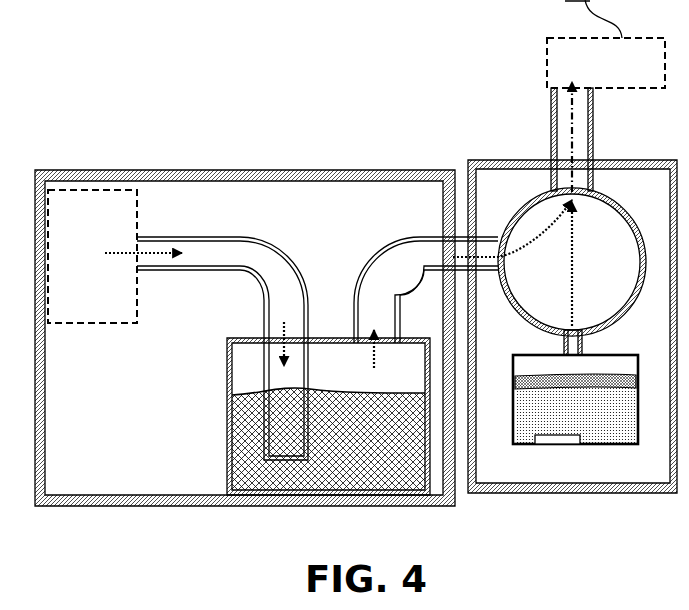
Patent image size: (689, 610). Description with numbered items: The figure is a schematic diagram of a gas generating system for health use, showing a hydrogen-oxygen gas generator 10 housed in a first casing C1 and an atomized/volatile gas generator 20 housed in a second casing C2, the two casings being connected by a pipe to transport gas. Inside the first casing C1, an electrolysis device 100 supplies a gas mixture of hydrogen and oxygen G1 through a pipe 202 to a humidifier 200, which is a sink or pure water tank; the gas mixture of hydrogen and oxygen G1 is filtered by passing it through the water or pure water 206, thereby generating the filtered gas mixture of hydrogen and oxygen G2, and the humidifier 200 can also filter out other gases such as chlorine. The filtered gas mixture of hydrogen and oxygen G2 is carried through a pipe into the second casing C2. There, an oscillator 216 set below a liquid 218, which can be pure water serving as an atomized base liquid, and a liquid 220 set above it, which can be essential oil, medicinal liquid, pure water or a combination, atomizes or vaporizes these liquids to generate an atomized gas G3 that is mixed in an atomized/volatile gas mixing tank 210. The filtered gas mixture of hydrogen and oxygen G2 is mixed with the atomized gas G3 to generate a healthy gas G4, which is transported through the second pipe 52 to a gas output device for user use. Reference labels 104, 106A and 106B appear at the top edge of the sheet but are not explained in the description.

The hydrogen-oxygen gas generator 10 is at (160, 172).
The atomized/volatile gas generator 20 is at (470, 160).
The first casing C1 is at (260, 172).
The second casing C2 is at (665, 160).
The electrolysis device 100 is at (75, 325).
The humidifier 200 is at (228, 372).
The gas inlet pipe 202 is at (232, 237).
The pure water 206 is at (340, 473).
The atomized/volatile gas mixing tank 210 is at (543, 192).
The second pipe 52 is at (555, 140).
The oscillator 216 is at (575, 445).
The liquid 218 is at (525, 445).
The liquid 220 is at (622, 388).
The gas mixture of hydrogen and oxygen G1 is at (155, 252).
The filtered gas mixture of hydrogen and oxygen G2 is at (367, 312).
The atomized gas G3 is at (578, 258).
The healthy gas G4 is at (568, 104).
The component 104 is at (299, 10).
The component 106A is at (177, 10).
The component 106B is at (442, 10).